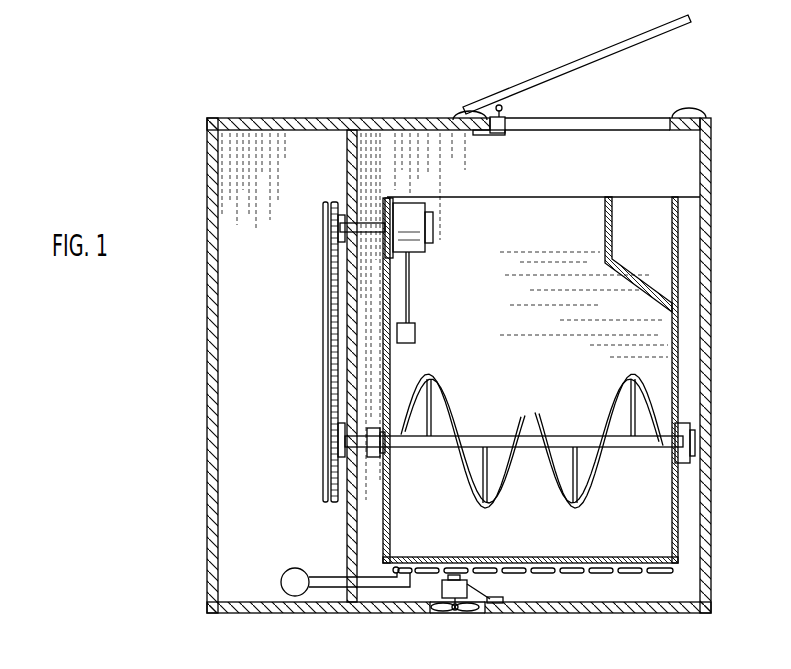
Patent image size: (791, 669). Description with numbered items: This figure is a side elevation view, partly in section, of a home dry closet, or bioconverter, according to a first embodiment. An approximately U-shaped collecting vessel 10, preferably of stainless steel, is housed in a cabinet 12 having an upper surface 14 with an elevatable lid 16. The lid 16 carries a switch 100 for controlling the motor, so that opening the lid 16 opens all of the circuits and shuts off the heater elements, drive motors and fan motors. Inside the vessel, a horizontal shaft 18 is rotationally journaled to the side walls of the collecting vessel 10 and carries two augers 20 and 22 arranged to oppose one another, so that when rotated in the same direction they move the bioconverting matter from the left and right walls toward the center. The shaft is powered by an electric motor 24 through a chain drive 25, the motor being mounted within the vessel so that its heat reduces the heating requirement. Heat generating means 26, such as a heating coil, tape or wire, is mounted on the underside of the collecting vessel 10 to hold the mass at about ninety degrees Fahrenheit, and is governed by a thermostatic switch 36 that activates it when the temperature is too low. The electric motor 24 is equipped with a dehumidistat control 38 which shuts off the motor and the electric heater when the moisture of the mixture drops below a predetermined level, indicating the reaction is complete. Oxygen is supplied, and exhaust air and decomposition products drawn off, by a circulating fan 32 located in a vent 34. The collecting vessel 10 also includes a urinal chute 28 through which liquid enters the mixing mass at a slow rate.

The collecting vessel 10 is at (677, 270).
The cabinet 12 is at (710, 320).
The upper surface 14 is at (363, 120).
The elevatable lid 16 is at (545, 72).
The switch 100 is at (505, 123).
The horizontal shaft 18 is at (445, 452).
The auger 20 is at (450, 400).
The auger 22 is at (612, 387).
The electric motor 24 is at (412, 218).
The chain drive 25 is at (323, 410).
The heat generating means 26 is at (603, 574).
The urinal chute 28 is at (605, 220).
The circulating fan 32 is at (445, 614).
The vent 34 is at (477, 613).
The thermostatic switch 36 is at (303, 567).
The dehumidistat control 38 is at (417, 333).